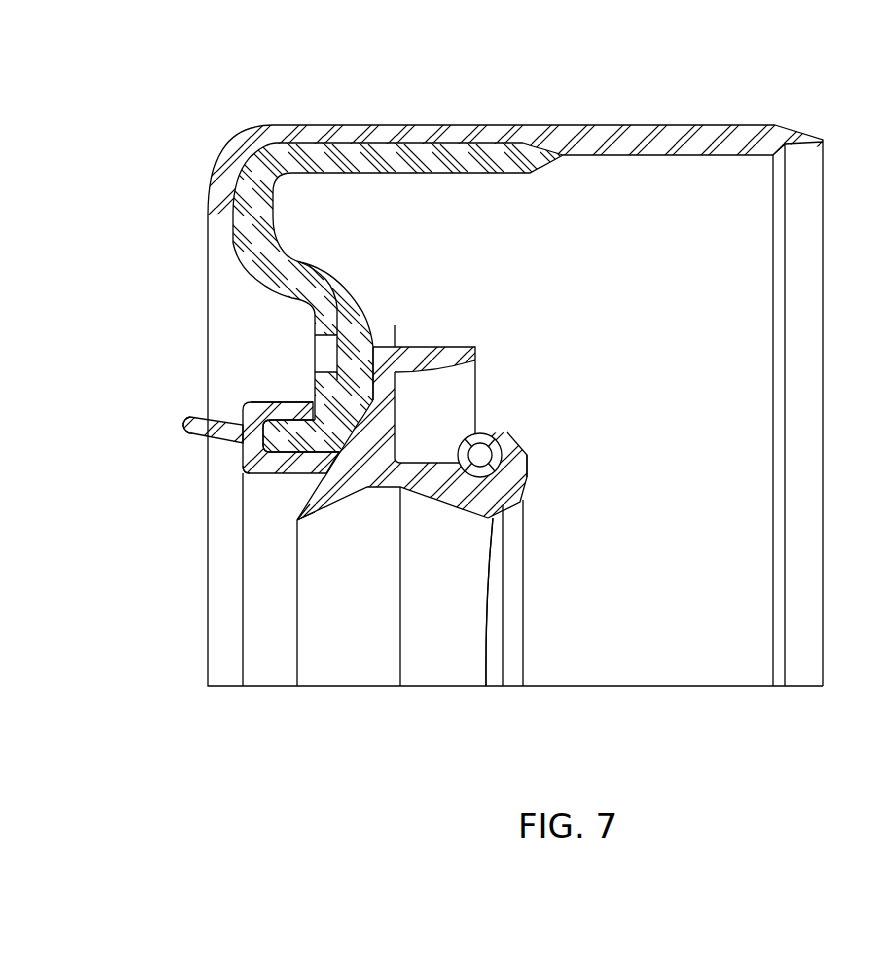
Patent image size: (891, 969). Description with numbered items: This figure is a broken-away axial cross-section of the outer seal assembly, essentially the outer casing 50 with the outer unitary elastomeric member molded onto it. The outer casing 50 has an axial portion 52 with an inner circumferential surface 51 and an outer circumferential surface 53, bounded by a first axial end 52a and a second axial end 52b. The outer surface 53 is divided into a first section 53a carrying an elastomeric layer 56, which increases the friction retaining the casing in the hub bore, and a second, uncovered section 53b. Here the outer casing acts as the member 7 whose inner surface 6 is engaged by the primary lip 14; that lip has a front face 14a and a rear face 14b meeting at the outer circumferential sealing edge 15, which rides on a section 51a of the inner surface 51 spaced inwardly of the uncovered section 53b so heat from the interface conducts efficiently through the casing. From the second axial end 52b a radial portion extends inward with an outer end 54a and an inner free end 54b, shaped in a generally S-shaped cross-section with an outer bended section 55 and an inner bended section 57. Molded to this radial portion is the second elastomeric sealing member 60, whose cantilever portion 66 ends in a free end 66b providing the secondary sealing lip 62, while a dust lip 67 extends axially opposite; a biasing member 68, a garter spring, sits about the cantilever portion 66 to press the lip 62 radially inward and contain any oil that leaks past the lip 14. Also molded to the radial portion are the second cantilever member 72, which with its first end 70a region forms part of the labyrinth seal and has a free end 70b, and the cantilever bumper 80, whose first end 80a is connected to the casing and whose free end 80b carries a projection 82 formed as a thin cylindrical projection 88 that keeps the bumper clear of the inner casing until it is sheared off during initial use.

The member 7 is at (601, 90).
The inner surface 6 is at (613, 168).
The lip 14 is at (496, 610).
The lip front face 14a is at (495, 618).
The lip rear face 14b is at (452, 645).
The outer circumferential sealing edge 15 is at (490, 593).
The outer casing 50 is at (330, 330).
The inner circumferential surface 51 is at (518, 180).
The section of inner surface 51a is at (668, 157).
The axial portion 52 is at (538, 363).
The first axial end 52a is at (802, 137).
The second axial end 52b is at (282, 157).
The outer circumferential surface 53 is at (507, 130).
The first section of outer surface 53a is at (427, 118).
The second uncovered section 53b is at (665, 127).
The outer end 54a is at (255, 182).
The inner free end 54b is at (281, 447).
The outer bended section 55 is at (240, 227).
The elastomeric layer 56 is at (363, 130).
The inner bended section 57 is at (360, 363).
The second elastomeric sealing member 60 is at (440, 411).
The sealing lip 62 is at (377, 498).
The cantilever portion 66 is at (550, 470).
The free end 66b is at (522, 457).
The dust lip 67 is at (297, 520).
The biasing member 68 is at (488, 437).
The first end of first cantilever member 70a is at (383, 347).
The bracket underside 70b is at (475, 357).
The second cantilever member 72 is at (449, 335).
The cantilever bumper 80 is at (225, 415).
The first end of bumper 80a is at (297, 403).
The free end of bumper 80b is at (238, 460).
The projection 82 is at (183, 403).
The cylindrical projection 88 is at (200, 430).